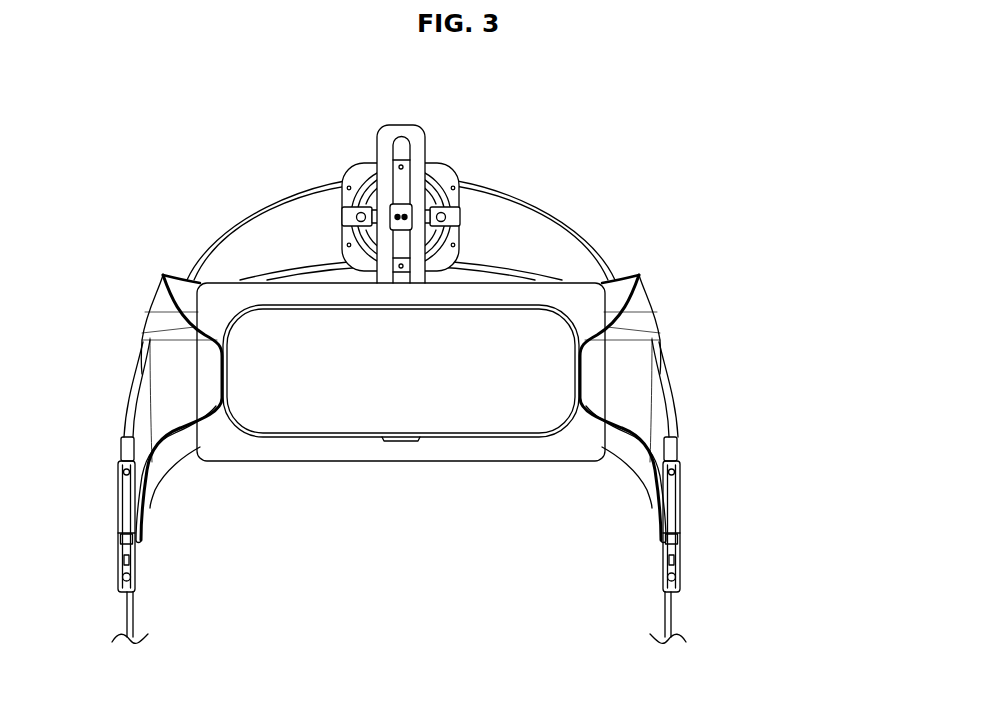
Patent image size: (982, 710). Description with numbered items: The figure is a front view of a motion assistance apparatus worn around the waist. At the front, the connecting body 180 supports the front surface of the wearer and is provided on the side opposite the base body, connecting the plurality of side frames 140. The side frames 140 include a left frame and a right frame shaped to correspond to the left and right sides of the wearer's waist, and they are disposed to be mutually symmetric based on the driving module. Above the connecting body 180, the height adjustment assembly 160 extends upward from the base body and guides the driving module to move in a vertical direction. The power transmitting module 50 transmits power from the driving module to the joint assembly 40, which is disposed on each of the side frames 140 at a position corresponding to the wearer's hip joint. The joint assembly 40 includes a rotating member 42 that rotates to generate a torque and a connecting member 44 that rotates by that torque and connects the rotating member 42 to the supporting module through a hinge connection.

The joint assembly 40 is at (736, 540).
The rotating member 42 is at (677, 582).
The connecting member 44 is at (706, 617).
The power transmitting module 50 is at (560, 213).
The side frames 140 is at (643, 367).
The height adjustment assembly 160 is at (432, 161).
The connecting body 180 is at (347, 418).